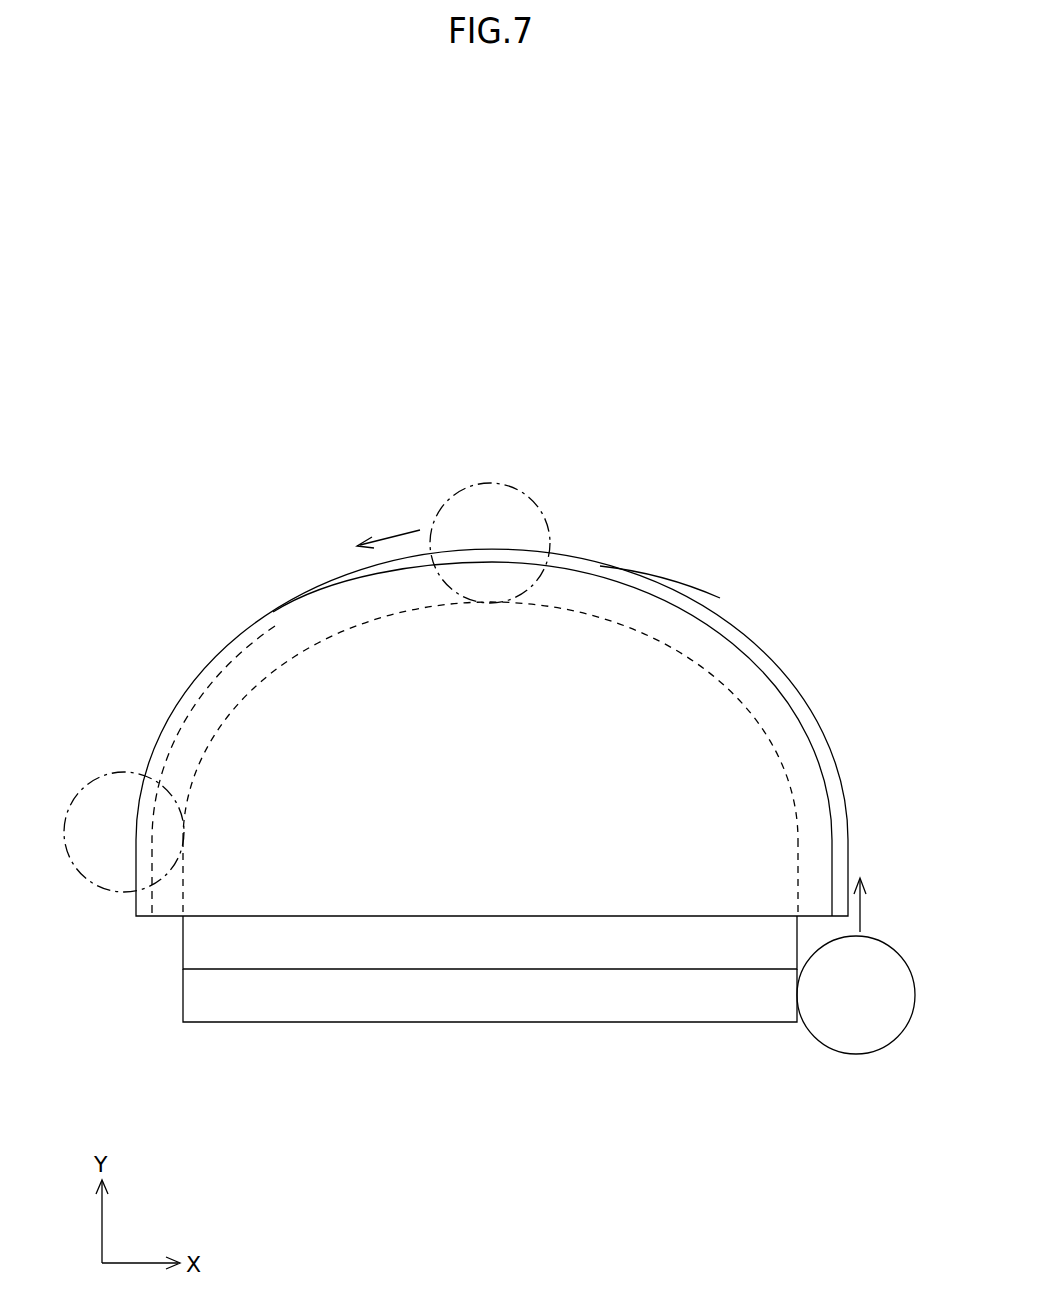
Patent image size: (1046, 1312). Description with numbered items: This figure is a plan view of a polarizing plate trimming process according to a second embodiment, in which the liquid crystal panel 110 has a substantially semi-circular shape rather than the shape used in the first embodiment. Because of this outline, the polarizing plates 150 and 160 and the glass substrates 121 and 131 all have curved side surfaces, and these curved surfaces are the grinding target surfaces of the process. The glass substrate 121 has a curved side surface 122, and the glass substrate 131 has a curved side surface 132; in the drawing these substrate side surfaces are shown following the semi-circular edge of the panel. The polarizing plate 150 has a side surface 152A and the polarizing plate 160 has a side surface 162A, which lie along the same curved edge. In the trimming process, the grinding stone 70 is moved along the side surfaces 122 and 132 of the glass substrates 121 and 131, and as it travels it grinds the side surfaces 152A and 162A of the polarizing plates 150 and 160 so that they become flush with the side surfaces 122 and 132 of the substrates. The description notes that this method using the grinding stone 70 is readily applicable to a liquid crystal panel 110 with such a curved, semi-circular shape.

The liquid crystal panel 110 is at (633, 542).
The glass substrate 121 is at (462, 947).
The glass substrate 131 is at (578, 1000).
The side surface 122 is at (700, 667).
The side surface 132 is at (490, 878).
The polarizing plate 150 is at (556, 647).
The side surface 152A is at (830, 797).
The polarizing plate 160 is at (799, 706).
The side surface 162A is at (653, 581).
The grinding stone 70 is at (862, 1032).